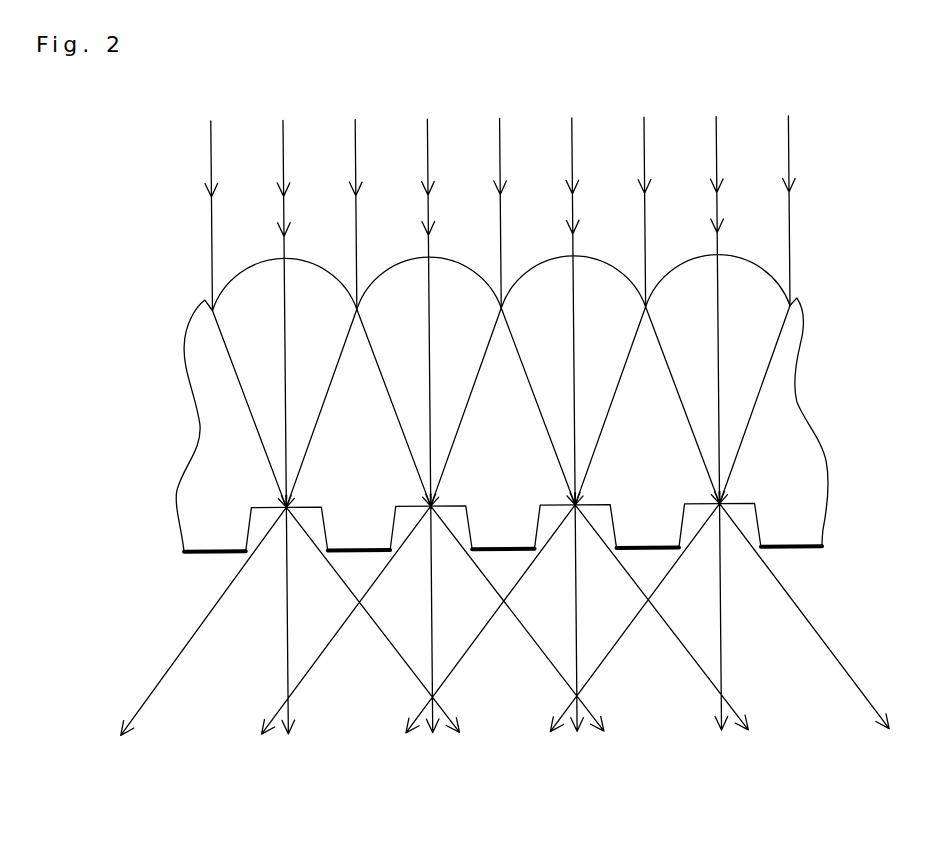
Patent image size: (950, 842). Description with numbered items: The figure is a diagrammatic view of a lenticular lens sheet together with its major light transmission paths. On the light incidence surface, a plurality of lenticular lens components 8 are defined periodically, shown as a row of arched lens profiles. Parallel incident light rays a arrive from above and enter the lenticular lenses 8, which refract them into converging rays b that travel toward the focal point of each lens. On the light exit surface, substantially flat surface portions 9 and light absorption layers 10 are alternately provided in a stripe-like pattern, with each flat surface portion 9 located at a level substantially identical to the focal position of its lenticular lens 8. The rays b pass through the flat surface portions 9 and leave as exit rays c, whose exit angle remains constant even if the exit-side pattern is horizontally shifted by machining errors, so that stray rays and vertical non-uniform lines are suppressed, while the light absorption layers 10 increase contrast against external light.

The incident light rays a is at (430, 142).
The rays entering the exit surface b is at (484, 355).
The exit rays c is at (310, 678).
The lenticular lens component 8 is at (752, 300).
The flat surface portion 9 is at (748, 498).
The light absorption layer 10 is at (822, 550).